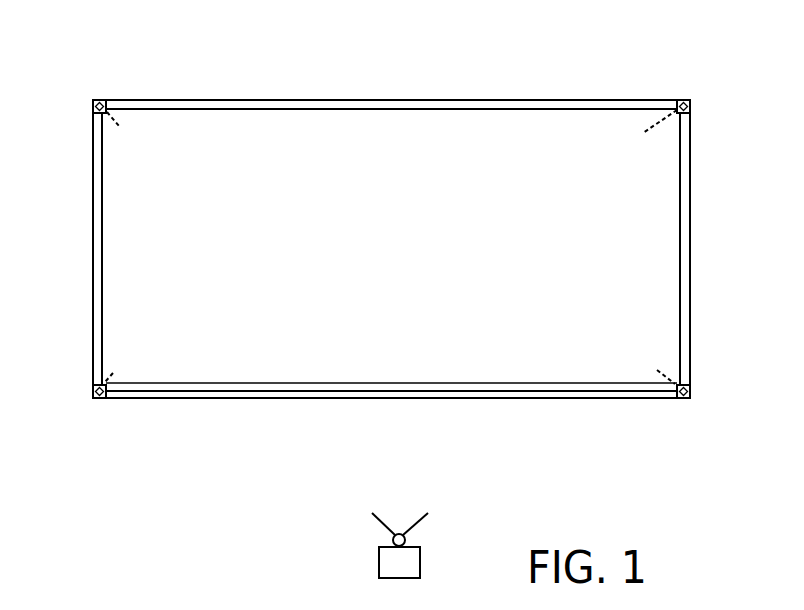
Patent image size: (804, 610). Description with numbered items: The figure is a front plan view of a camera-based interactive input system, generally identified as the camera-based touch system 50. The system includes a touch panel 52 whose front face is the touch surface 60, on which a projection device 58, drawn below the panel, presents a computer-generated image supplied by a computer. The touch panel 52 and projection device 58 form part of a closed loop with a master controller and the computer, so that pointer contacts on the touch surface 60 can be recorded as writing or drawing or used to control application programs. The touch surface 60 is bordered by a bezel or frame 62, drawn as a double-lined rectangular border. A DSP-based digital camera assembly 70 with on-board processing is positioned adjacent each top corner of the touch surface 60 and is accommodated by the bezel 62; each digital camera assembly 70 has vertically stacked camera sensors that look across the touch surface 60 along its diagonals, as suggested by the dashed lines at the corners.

The camera-based touch system 50 is at (430, 241).
The touch panel 52 is at (406, 342).
The projection device 58 is at (422, 570).
The touch surface 60 is at (386, 268).
The bezel 62 is at (690, 288).
The digital camera assembly 70 is at (100, 100).